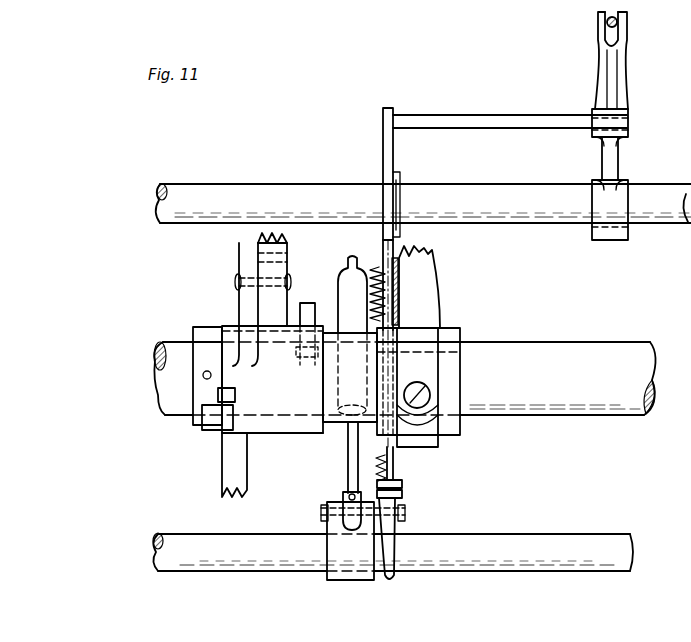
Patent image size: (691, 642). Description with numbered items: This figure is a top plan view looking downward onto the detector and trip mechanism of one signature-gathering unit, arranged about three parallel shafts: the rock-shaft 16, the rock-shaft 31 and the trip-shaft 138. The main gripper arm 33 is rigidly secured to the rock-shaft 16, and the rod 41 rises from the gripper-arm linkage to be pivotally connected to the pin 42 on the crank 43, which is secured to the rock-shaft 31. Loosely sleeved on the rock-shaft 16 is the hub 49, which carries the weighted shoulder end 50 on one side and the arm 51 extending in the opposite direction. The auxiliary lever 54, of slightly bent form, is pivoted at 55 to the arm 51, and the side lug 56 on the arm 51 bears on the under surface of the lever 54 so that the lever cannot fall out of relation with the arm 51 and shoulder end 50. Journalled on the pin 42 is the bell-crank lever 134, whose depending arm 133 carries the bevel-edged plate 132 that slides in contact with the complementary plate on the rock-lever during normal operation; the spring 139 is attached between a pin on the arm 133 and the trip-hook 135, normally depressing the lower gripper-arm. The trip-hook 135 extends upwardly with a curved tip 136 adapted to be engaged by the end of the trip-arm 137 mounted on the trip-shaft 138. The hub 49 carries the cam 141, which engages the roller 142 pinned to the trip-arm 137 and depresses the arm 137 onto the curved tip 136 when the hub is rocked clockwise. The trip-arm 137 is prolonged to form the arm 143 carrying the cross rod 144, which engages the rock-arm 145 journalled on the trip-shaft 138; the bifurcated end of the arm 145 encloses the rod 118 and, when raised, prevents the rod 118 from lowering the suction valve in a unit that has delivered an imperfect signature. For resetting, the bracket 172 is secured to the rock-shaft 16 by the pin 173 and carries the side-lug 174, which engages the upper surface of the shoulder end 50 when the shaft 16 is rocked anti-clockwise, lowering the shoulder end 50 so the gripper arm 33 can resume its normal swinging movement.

The rock-shaft 16 is at (166, 380).
The rock-shaft 31 is at (150, 560).
The main gripper arm 33 is at (435, 316).
The rod 41 is at (347, 308).
The pin 42 is at (322, 512).
The crank 43 is at (333, 557).
The hub 49 is at (284, 435).
The weighted shoulder end 50 is at (247, 478).
The arm 51 is at (248, 304).
The auxiliary lever 54 is at (288, 271).
The pivot 55 is at (292, 284).
The side lug 56 is at (289, 256).
The rod 118 is at (619, 23).
The bevel-edged plate 132 is at (403, 484).
The depending arm 133 is at (403, 496).
The bell-crank lever 134 is at (389, 548).
The trip-hook 135 is at (394, 463).
The curved tip 136 is at (392, 356).
The trip-arm 137 is at (384, 255).
The trip-shaft 138 is at (158, 214).
The spring 139 is at (376, 296).
The cam 141 is at (309, 306).
The roller 142 is at (297, 361).
The arm 143 is at (393, 155).
The cross rod 144 is at (472, 119).
The rock-arm 145 is at (617, 154).
The bracket 172 is at (196, 418).
The pin 173 is at (205, 370).
The side-lug 174 is at (229, 421).